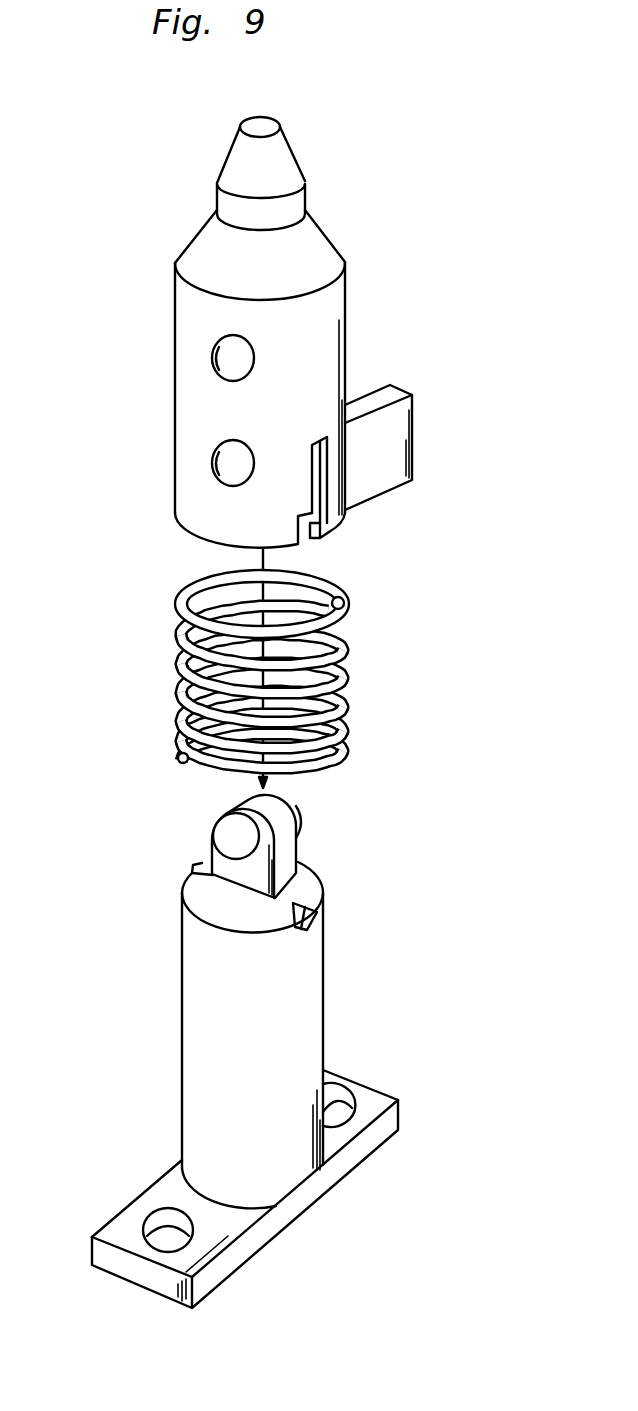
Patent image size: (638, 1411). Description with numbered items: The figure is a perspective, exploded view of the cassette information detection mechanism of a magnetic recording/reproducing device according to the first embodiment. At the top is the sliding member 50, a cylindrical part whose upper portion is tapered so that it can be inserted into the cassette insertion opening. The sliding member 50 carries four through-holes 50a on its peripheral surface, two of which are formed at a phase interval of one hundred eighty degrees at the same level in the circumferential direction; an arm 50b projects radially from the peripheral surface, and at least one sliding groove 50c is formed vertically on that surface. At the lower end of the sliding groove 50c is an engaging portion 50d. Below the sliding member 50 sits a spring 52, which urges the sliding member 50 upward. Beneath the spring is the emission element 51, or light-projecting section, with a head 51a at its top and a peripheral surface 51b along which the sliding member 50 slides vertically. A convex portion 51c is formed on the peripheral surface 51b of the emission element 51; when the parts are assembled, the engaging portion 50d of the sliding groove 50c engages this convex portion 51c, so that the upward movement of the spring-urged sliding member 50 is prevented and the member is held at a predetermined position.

The sliding member 50 is at (332, 305).
The through-holes 50a is at (230, 360).
The arm 50b is at (388, 388).
The sliding groove 50c is at (313, 460).
The engaging portion 50d is at (328, 530).
The spring 52 is at (342, 596).
The emission element 51 is at (289, 862).
The boss of head 51a is at (297, 812).
The peripheral surface 51b is at (316, 972).
The convex portion 51c is at (320, 915).